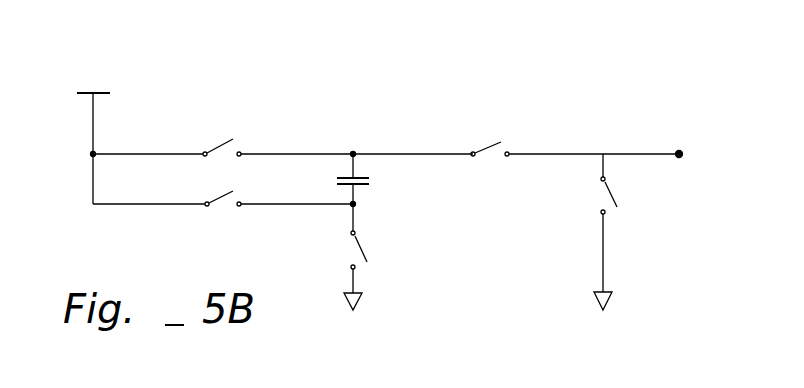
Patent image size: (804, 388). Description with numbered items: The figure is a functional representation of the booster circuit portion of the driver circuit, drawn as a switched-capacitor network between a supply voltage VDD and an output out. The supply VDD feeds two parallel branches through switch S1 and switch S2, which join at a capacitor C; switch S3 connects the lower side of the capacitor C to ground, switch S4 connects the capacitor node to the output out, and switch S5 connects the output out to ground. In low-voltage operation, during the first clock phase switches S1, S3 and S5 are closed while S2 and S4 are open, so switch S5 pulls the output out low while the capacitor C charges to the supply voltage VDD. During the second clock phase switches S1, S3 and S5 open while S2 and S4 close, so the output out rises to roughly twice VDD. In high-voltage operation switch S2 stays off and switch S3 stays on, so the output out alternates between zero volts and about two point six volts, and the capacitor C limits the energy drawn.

The supply voltage VDD is at (91, 105).
The switch S1 is at (222, 130).
The switch S2 is at (223, 219).
The switch S3 is at (374, 257).
The switch S4 is at (490, 129).
The switch S5 is at (622, 232).
The capacitor C is at (363, 179).
The output out is at (620, 153).